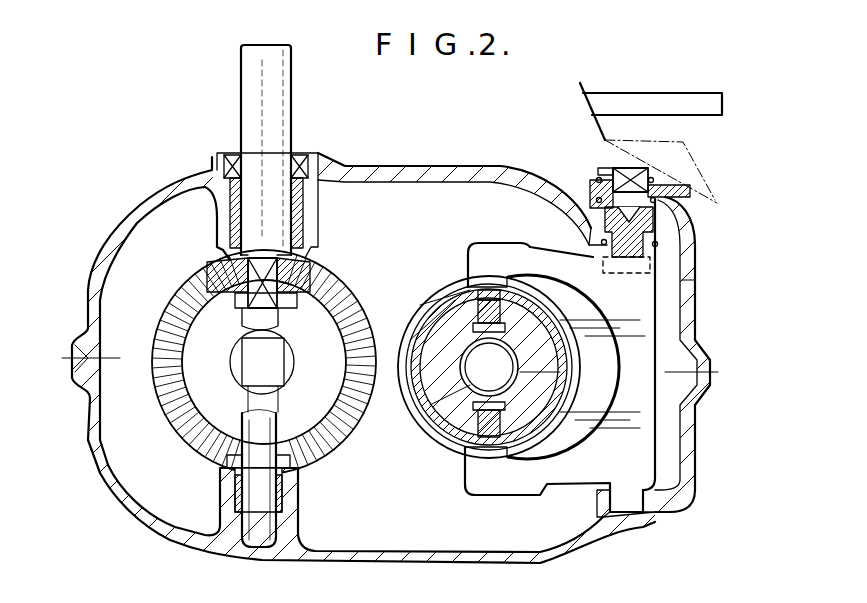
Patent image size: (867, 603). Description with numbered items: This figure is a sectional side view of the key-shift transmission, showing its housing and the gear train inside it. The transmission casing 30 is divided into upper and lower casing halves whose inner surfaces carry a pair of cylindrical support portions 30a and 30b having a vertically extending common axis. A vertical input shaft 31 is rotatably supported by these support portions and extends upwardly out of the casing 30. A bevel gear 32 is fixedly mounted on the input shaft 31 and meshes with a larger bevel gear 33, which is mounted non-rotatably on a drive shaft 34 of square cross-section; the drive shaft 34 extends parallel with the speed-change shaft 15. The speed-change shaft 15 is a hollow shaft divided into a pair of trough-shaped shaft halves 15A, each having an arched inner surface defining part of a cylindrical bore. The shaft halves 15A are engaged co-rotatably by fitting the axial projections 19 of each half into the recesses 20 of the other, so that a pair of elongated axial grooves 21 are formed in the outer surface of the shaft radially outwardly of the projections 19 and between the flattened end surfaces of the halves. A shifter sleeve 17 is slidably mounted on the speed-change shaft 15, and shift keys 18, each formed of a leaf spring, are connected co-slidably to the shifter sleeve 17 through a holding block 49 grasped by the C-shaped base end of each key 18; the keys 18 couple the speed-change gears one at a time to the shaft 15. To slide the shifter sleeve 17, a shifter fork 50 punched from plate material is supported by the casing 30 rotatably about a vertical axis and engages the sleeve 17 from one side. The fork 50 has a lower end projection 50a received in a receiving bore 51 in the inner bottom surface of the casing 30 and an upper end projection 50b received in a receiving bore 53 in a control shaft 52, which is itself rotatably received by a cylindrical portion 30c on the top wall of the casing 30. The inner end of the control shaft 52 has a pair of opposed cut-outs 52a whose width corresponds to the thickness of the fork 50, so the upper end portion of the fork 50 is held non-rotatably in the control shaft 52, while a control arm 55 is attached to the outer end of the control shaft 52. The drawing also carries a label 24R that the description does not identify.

The transmission casing 30 is at (130, 228).
The cylindrical support portion 30a is at (318, 182).
The cylindrical support portion 30b is at (222, 482).
The cylindrical portion 30c is at (590, 215).
The vertical input shaft 31 is at (283, 310).
The bevel gear 32 is at (222, 262).
The larger bevel gear 33 is at (170, 405).
The drive shaft 34 is at (248, 362).
The shaft halves 15A is at (408, 345).
The speed-change shaft 15 is at (425, 432).
The shifter sleeve 17 is at (416, 372).
The shift keys 18 is at (545, 300).
The axial projections 19 is at (600, 300).
The recesses 20 is at (455, 325).
The elongated axial grooves 21 is at (468, 262).
The retaining ring 24R is at (540, 295).
The holding block 49 is at (484, 298).
The shifter fork 50 is at (512, 492).
The lower end projection 50a is at (620, 497).
The upper end projection 50b is at (680, 240).
The receiving bore 51 is at (637, 517).
The control shaft 52 is at (605, 178).
The cut-outs 52a is at (683, 290).
The receiving bore 53 is at (660, 230).
The control arm 55 is at (650, 112).